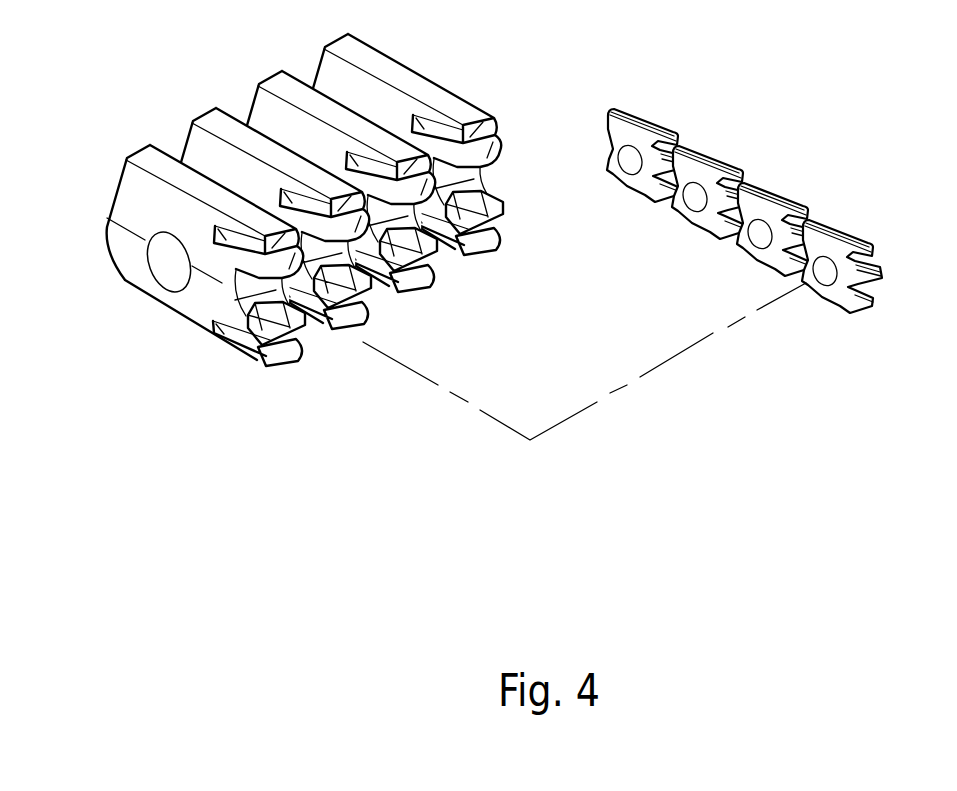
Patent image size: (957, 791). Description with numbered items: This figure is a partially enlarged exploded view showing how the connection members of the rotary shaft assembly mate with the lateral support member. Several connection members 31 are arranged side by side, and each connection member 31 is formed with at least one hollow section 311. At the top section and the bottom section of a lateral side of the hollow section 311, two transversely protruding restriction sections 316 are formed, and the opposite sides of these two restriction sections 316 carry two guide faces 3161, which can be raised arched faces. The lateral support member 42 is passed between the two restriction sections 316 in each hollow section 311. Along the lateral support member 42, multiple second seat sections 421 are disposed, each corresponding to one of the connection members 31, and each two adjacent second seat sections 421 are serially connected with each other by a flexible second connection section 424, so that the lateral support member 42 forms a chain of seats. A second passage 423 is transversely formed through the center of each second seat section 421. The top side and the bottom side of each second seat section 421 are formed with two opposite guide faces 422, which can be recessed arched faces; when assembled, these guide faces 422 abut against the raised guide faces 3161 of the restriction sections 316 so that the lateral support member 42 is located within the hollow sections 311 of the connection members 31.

The connection member 31 is at (266, 227).
The hollow section 311 is at (236, 299).
The restriction section 316 is at (311, 353).
The guide face 3161 is at (262, 315).
The lateral support member 42 is at (756, 205).
The second seat section 421 is at (838, 177).
The guide face 422 is at (854, 279).
The second passage 423 is at (791, 305).
The second connection section 424 is at (785, 268).